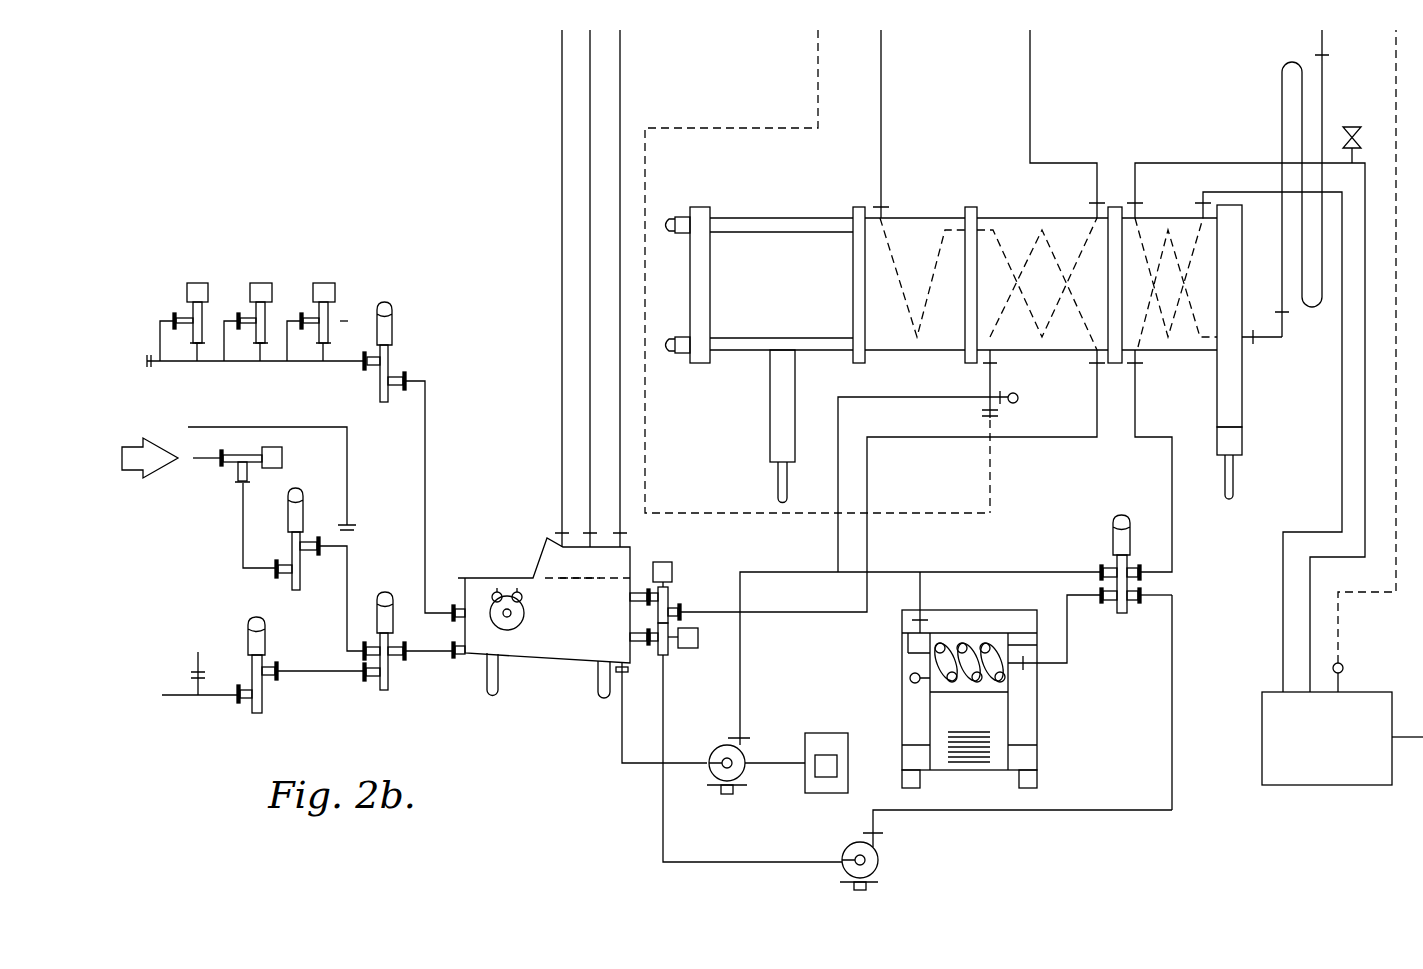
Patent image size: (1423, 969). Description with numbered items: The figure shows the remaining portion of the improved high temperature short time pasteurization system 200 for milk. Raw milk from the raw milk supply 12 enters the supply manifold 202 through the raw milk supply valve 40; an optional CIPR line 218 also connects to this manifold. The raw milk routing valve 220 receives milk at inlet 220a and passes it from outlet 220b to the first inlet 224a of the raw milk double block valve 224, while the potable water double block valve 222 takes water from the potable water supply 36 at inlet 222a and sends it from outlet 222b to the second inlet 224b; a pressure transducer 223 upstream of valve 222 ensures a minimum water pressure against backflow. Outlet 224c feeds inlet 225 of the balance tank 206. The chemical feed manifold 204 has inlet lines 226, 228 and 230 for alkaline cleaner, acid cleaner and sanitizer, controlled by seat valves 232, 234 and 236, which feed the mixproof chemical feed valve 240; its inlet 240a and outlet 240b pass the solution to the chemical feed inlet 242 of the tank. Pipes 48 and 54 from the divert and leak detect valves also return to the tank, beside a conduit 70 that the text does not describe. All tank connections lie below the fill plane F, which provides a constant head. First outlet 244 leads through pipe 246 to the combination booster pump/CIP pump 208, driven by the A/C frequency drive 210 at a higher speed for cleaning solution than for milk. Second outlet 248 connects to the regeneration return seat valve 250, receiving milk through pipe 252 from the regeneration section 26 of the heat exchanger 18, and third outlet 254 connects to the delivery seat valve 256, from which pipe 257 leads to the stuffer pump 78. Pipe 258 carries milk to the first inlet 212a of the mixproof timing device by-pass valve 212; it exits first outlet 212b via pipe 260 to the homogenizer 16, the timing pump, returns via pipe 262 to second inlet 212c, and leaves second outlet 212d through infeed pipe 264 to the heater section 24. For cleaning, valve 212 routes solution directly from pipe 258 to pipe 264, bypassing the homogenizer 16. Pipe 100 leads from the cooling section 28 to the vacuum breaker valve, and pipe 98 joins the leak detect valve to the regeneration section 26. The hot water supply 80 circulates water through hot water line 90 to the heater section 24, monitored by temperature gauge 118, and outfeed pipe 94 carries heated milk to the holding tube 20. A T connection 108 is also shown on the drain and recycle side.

The raw milk supply 12 is at (152, 474).
The homogenizer 16 is at (1038, 703).
The heat exchanger 18 is at (967, 198).
The holding tube 20 is at (1323, 82).
The heater section 24 is at (1155, 352).
The regeneration section 26 is at (1018, 352).
The cooling section 28 is at (935, 350).
The potable water supply 36 is at (166, 695).
The raw milk supply valve 40 is at (282, 452).
The pipe 48 is at (620, 80).
The pipe 54 is at (590, 145).
The outer conduit 70 is at (562, 93).
The stuffer pump 78 is at (880, 858).
The hot water supply 80 is at (1316, 796).
The hot water line 90 is at (1363, 160).
The outfeed pipe 94 is at (1268, 338).
The pipe 98 is at (1030, 82).
The pipe 100 is at (881, 108).
The second T connection 108 is at (1000, 404).
The temperature gauge 118 is at (1345, 666).
The high temperature short time pasteurization system 200 is at (449, 155).
The supply manifold 202 is at (343, 727).
The chemical feed manifold 204 is at (345, 278).
The balance tank 206 is at (530, 655).
The combination booster pump/CIP pump 208 is at (715, 750).
The A/C frequency drive 210 is at (822, 733).
The timing device by-pass valve 212 is at (1112, 557).
The first inlet 212a is at (1142, 594).
The first outlet 212b is at (1100, 593).
The second inlet 212c is at (1100, 570).
The second outlet 212d is at (1135, 555).
The CIPR line 218 is at (349, 466).
The raw milk routing valve 220 is at (294, 558).
The inlet 220a is at (280, 583).
The outlet 220b is at (313, 543).
The potable water double block valve 222 is at (258, 688).
The inlet 222a is at (243, 702).
The outlet 222b is at (276, 664).
The pressure transducer 223 is at (195, 667).
The raw milk double block valve 224 is at (392, 663).
The first inlet 224a is at (363, 650).
The second inlet 224b is at (370, 690).
The outlet 224c is at (400, 592).
The inlet 225 is at (458, 655).
The inlet line 226 is at (287, 290).
The inlet line 228 is at (224, 290).
The inlet line 230 is at (160, 290).
The seat valve 232 is at (345, 318).
The seat valve 234 is at (263, 341).
The seat valve 236 is at (200, 341).
The mixproof chemical feed valve 240 is at (390, 360).
The inlet 240a is at (367, 370).
The outlet 240b is at (400, 375).
The chemical feed inlet 242 is at (460, 608).
The first outlet 244 is at (614, 680).
The pipe 246 is at (632, 768).
The second outlet 248 is at (640, 590).
The regeneration return seat valve 250 is at (675, 566).
The pipe 252 is at (753, 610).
The third outlet 254 is at (636, 642).
The delivery seat valve 256 is at (698, 637).
The pipe 257 is at (693, 862).
The pipe 258 is at (1077, 812).
The pipe 260 is at (1067, 645).
The pipe 262 is at (958, 572).
The infeed pipe 264 is at (1173, 515).
The fill plane F is at (580, 577).